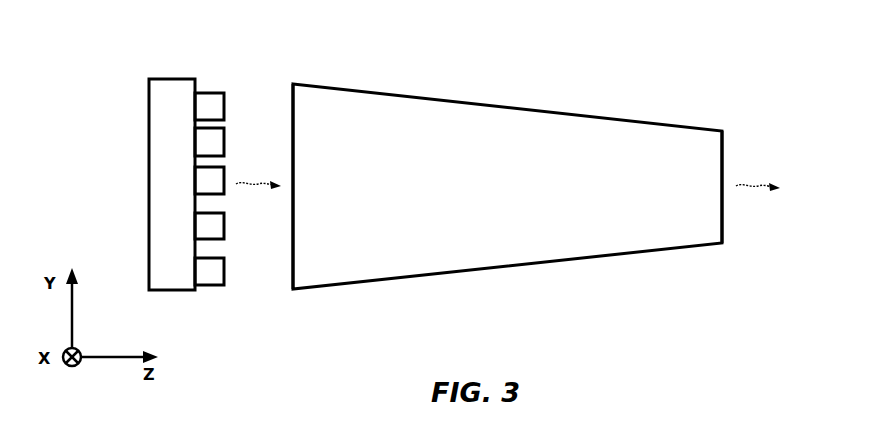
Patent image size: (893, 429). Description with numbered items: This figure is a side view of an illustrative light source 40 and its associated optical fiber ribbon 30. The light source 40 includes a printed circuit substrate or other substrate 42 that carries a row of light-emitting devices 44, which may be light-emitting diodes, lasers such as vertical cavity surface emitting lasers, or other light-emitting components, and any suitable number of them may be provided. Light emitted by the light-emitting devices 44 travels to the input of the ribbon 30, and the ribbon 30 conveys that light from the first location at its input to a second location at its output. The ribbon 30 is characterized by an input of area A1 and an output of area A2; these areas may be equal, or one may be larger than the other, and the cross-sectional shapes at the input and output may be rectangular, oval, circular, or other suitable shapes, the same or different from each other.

The optical fiber ribbon 30 is at (513, 125).
The light source 40 is at (157, 56).
The substrate 42 is at (166, 184).
The light-emitting devices 44 is at (210, 108).
The input area A1 is at (293, 265).
The output area A2 is at (722, 213).